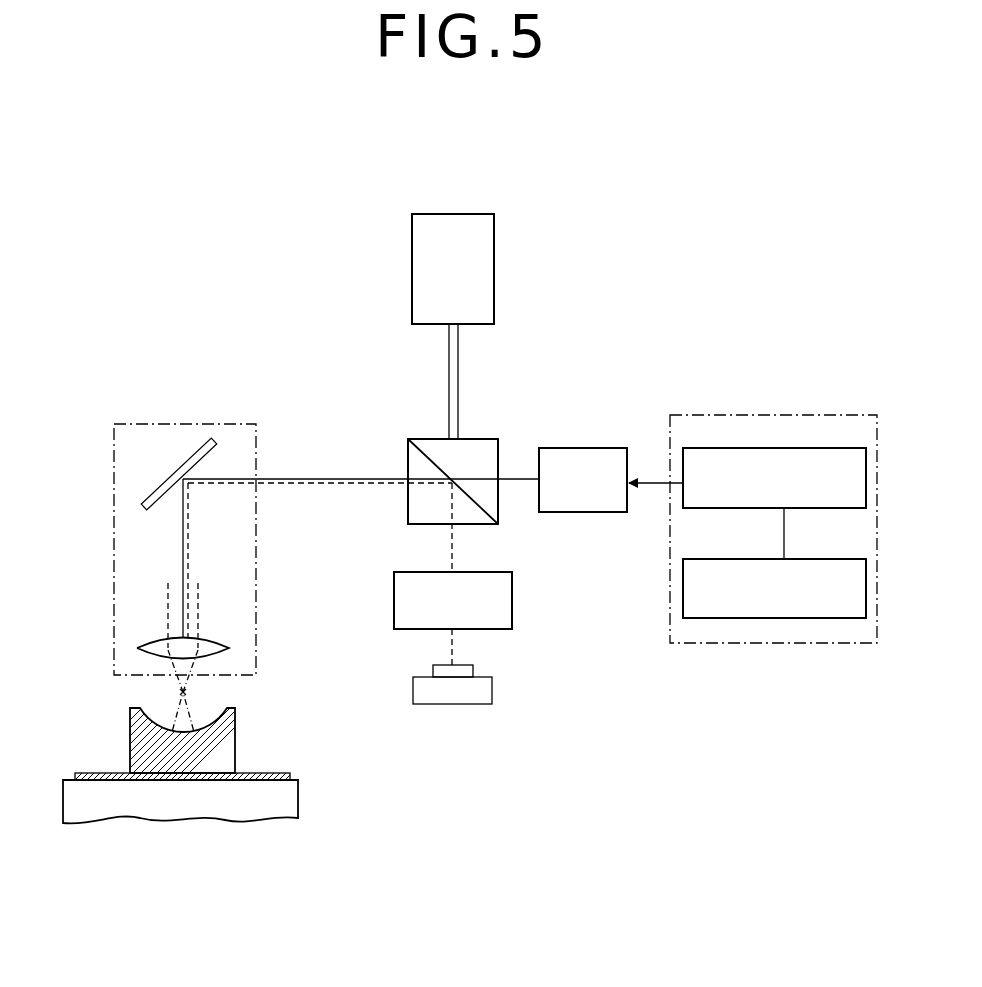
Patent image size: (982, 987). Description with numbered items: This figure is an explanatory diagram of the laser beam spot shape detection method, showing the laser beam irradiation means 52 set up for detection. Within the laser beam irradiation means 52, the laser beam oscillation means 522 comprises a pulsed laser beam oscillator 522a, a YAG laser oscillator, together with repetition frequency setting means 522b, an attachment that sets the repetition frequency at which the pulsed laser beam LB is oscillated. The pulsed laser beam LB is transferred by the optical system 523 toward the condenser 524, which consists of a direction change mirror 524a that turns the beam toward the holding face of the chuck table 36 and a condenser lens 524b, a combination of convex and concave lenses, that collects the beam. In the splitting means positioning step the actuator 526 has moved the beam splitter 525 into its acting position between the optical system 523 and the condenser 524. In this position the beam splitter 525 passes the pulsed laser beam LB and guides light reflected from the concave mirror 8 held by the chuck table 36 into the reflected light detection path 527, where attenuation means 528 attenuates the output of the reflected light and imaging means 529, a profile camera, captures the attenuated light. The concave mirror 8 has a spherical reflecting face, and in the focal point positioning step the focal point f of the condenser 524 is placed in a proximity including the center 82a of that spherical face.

The laser beam irradiation means 52 is at (527, 321).
The laser beam oscillation means 522 is at (804, 408).
The pulsed laser beam oscillator 522a is at (728, 448).
The repetition frequency setting means 522b is at (758, 618).
The optical system 523 is at (576, 448).
The condenser 524 is at (184, 422).
The direction change mirror 524a is at (165, 490).
The condenser lens 524b is at (150, 641).
The beam splitter 525 is at (408, 470).
The actuator 526 is at (412, 270).
The reflected light detection path 527 is at (447, 556).
The attenuation means 528 is at (394, 603).
The imaging means 529 is at (413, 690).
The pulsed laser beam LB is at (167, 598).
The focal point f is at (183, 692).
The concave mirror 8 is at (264, 739).
The center of the spherical face 82a is at (183, 692).
The chuck table 36 is at (290, 801).